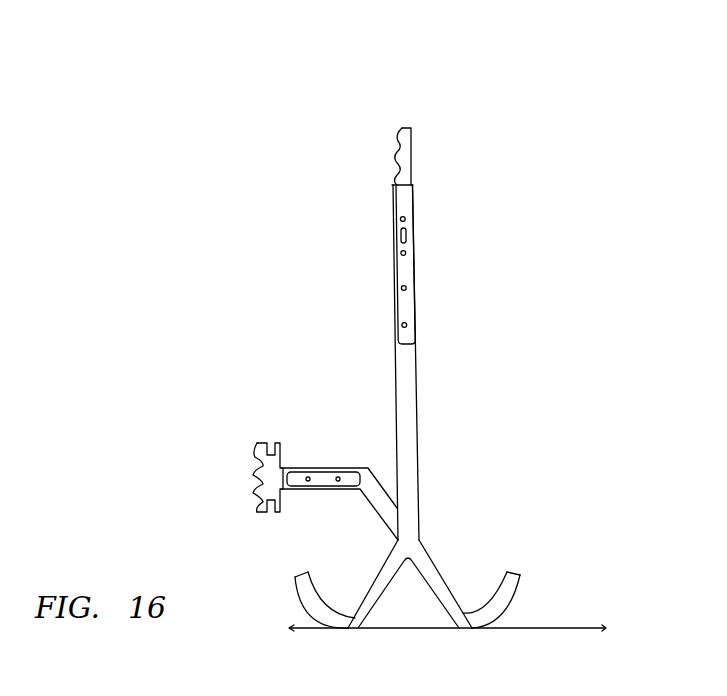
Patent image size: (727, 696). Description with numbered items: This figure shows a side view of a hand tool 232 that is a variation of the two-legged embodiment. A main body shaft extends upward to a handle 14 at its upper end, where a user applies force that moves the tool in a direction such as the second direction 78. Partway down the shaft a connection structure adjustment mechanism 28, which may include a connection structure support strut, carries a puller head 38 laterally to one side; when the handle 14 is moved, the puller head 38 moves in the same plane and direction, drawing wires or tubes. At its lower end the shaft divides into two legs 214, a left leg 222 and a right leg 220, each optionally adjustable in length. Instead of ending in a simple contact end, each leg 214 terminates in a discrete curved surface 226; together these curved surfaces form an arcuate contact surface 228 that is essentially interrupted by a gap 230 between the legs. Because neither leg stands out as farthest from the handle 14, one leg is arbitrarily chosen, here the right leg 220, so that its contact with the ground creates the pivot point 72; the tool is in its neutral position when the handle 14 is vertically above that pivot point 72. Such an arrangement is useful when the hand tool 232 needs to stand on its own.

The handle 14 is at (397, 153).
The second direction 78 is at (348, 115).
The hand tool 232 is at (484, 158).
The connection structure adjustment mechanism 28 is at (312, 462).
The puller head 38 is at (260, 452).
The legs 214 is at (438, 578).
The left leg 222 is at (371, 574).
The right leg 220 is at (448, 573).
The discrete curved surface 226 is at (502, 608).
The arcuate contact surface 228 is at (325, 600).
The gap 230 is at (405, 613).
The pivot point 72 is at (467, 628).